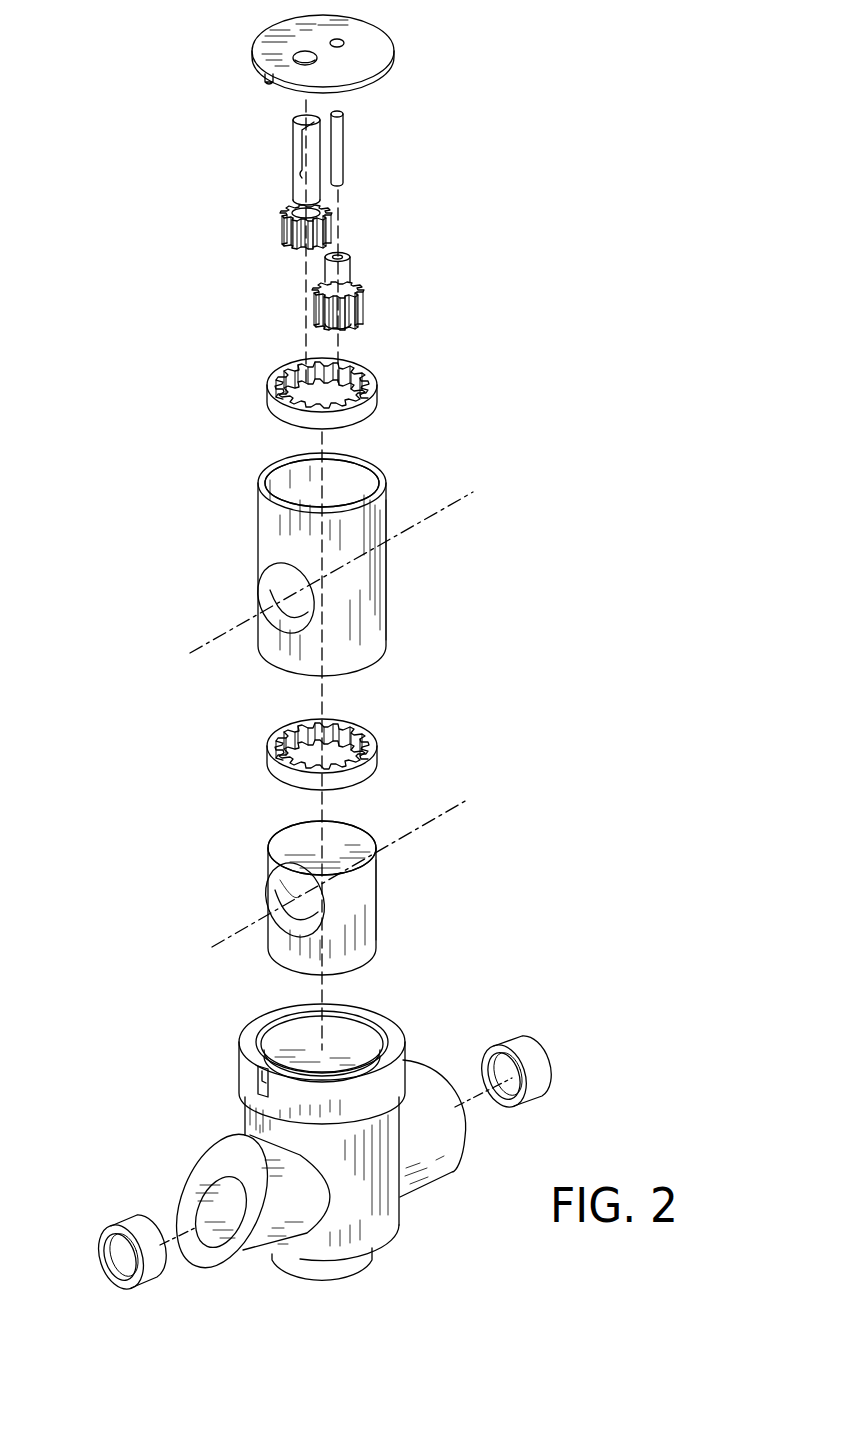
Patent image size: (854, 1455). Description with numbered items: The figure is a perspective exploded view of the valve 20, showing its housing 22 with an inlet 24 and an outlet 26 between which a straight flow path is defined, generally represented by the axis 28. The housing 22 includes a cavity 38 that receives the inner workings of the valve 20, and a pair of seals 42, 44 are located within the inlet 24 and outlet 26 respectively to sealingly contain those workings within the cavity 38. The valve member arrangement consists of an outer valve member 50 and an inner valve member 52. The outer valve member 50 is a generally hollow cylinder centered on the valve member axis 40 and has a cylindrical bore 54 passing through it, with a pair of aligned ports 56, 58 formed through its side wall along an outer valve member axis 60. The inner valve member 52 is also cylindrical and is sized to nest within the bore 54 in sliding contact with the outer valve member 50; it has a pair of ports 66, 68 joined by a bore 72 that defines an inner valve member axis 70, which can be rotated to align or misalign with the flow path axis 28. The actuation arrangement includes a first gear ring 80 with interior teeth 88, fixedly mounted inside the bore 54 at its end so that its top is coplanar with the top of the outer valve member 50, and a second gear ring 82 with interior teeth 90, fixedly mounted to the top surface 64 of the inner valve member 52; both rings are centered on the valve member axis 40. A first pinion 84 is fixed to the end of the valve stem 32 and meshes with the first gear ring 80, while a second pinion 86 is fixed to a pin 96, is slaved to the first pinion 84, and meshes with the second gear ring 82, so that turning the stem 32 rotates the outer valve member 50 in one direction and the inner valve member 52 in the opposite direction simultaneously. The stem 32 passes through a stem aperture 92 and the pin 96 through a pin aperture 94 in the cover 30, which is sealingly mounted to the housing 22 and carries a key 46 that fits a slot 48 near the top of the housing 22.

The valve 20 is at (120, 125).
The housing 22 is at (382, 1220).
The inlet 24 is at (447, 1158).
The outlet 26 is at (232, 1150).
The axis 28 is at (172, 1225).
The cover 30 is at (358, 56).
The valve stem 32 is at (297, 155).
The cavity 38 is at (355, 1048).
The valve member axis 40 is at (318, 995).
The seal 42 is at (507, 1040).
The seal 44 is at (115, 1222).
The key 46 is at (264, 80).
The slot 48 is at (258, 1078).
The outer valve member 50 is at (388, 553).
The inner valve member 52 is at (378, 925).
The cylindrical bore 54 is at (352, 485).
The port 56 is at (273, 570).
The port 58 is at (388, 528).
The outer valve member axis 60 is at (202, 638).
The top surface 64 is at (346, 836).
The port 66 is at (275, 870).
The port 68 is at (377, 858).
The inner valve member axis 70 is at (228, 932).
The bore 72 is at (280, 888).
The first gear ring 80 is at (377, 400).
The second gear ring 82 is at (377, 760).
The first pinion 84 is at (280, 222).
The second pinion 86 is at (366, 305).
The interior teeth 88 is at (298, 372).
The interior teeth 90 is at (286, 725).
The stem aperture 92 is at (300, 52).
The pin aperture 94 is at (344, 43).
The pin 96 is at (343, 148).